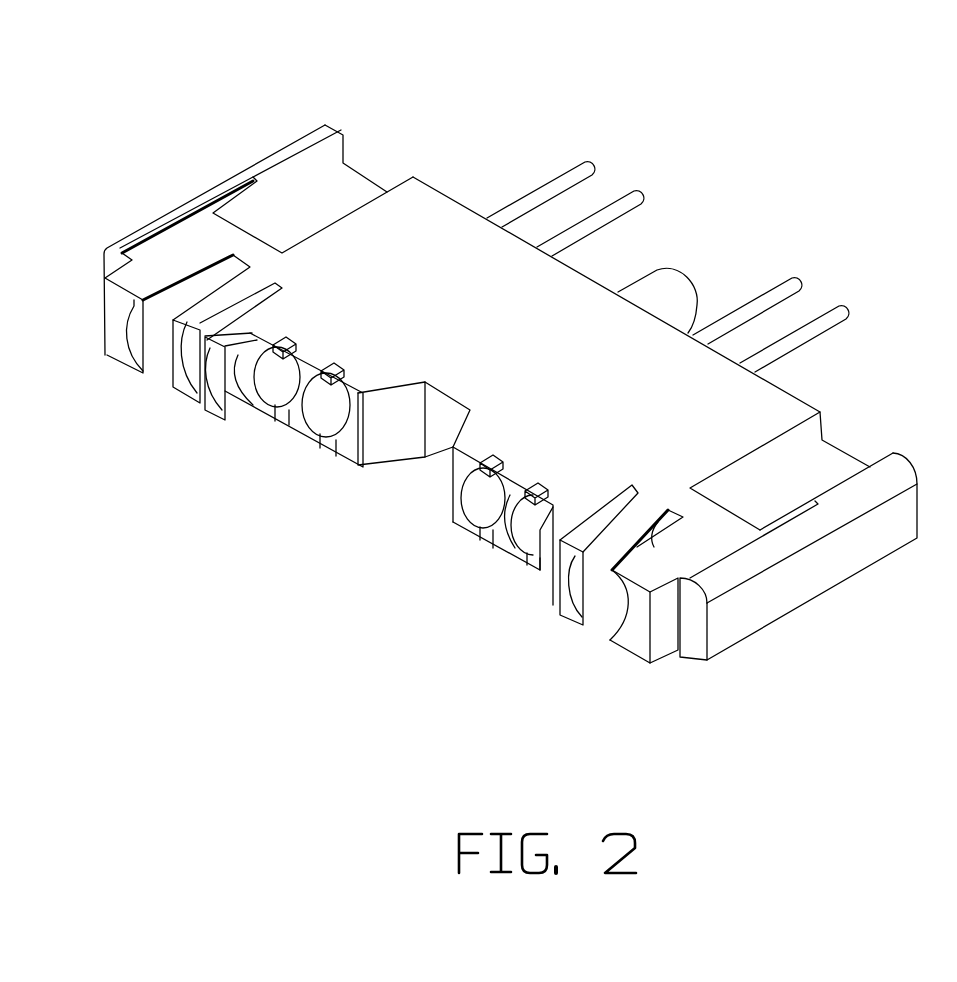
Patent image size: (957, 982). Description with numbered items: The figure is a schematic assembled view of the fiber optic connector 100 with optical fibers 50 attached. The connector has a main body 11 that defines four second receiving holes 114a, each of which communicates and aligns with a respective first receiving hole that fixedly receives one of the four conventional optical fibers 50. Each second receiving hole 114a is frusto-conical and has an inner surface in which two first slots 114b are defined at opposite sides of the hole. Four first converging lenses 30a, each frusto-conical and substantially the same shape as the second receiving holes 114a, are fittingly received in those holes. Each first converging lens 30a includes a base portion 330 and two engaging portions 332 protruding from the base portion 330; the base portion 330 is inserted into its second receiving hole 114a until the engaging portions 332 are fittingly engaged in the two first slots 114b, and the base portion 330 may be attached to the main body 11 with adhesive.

The fiber optic connector 100 is at (160, 108).
The main body 11 is at (572, 292).
The optical fibers 50 is at (820, 327).
The first converging lens 30a is at (126, 432).
The base portion 330 is at (322, 418).
The engaging portions 332 is at (345, 362).
The second receiving hole 114a is at (345, 398).
The first slots 114b is at (343, 363).